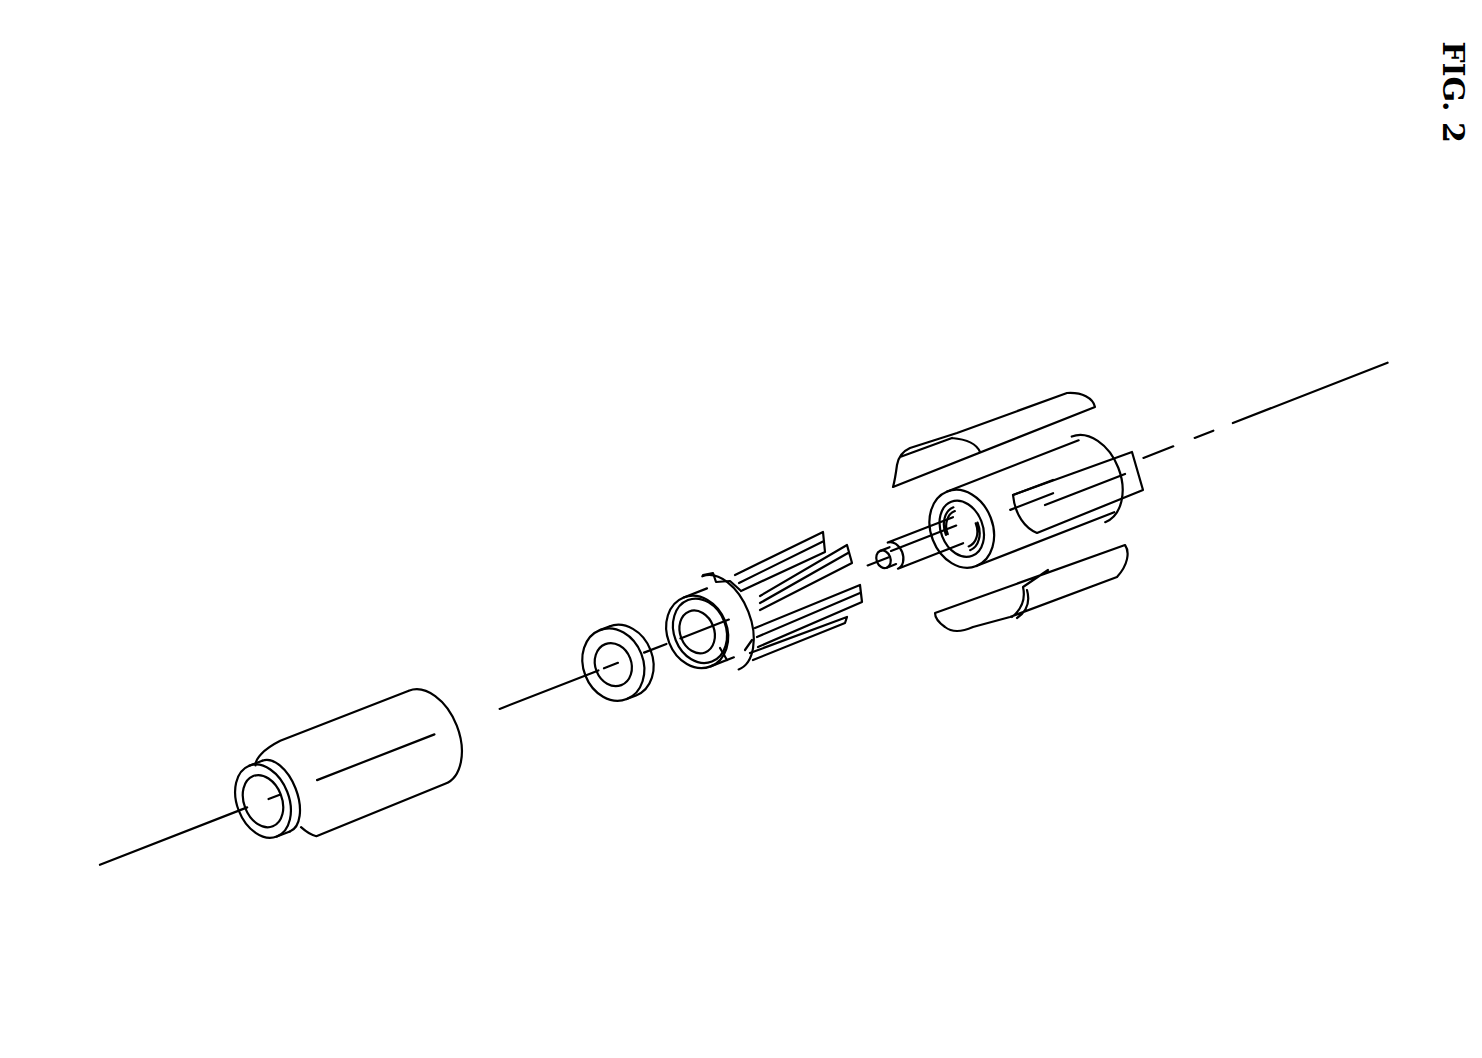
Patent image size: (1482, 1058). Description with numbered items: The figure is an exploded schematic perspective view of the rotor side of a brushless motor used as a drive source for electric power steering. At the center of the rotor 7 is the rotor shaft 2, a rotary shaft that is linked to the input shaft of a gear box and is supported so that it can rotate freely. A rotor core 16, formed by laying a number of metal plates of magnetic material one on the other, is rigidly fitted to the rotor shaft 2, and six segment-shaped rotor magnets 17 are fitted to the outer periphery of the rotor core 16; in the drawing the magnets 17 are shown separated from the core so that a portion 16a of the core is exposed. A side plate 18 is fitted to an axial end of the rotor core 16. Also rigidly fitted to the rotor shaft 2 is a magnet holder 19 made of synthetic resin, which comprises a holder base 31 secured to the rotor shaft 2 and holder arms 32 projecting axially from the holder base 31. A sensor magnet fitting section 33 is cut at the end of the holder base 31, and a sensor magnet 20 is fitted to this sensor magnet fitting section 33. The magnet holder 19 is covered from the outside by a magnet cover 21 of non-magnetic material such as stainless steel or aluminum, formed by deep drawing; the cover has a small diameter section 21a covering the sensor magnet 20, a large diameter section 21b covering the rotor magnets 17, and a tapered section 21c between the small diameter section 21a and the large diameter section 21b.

The rotor shaft 2 is at (912, 570).
The rotor 7 is at (1065, 505).
The rotor core 16 is at (1032, 505).
The engagement slot 16a is at (1013, 487).
The rotor magnets 17 is at (903, 455).
The side plate 18 is at (1093, 440).
The magnet holder 19 is at (742, 653).
The sensor magnet 20 is at (600, 690).
The magnet cover 21 is at (345, 780).
The small diameter section 21a is at (265, 833).
The large diameter section 21b is at (358, 723).
The tapered section 21c is at (320, 830).
The holder base 31 is at (742, 664).
The holder arms 32 is at (793, 627).
The sensor magnet fitting section 33 is at (720, 648).